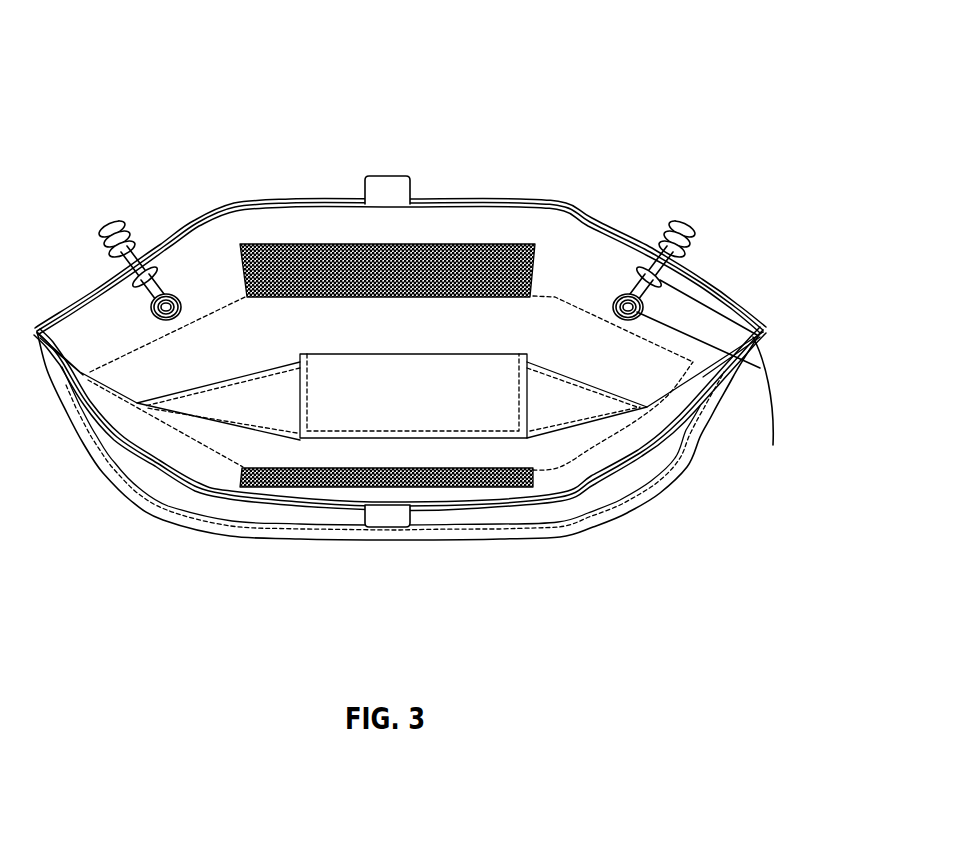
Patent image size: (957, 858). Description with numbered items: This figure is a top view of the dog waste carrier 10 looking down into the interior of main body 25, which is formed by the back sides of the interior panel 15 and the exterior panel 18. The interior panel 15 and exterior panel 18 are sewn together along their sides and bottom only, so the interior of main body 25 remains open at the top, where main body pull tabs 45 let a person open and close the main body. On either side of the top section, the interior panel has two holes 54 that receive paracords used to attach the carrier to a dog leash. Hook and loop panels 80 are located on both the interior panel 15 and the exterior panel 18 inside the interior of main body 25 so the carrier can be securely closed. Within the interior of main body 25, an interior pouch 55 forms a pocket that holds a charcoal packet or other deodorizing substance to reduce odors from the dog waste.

The dog waste carrier 10 is at (412, 328).
The interior panel 15 is at (584, 214).
The exterior panel 18 is at (190, 528).
The interior of main body 25 is at (448, 333).
The main body pull tabs 45 is at (387, 175).
The holes 54 is at (443, 350).
The interior pouch 55 is at (500, 387).
The hook and loop panels 80 is at (305, 256).